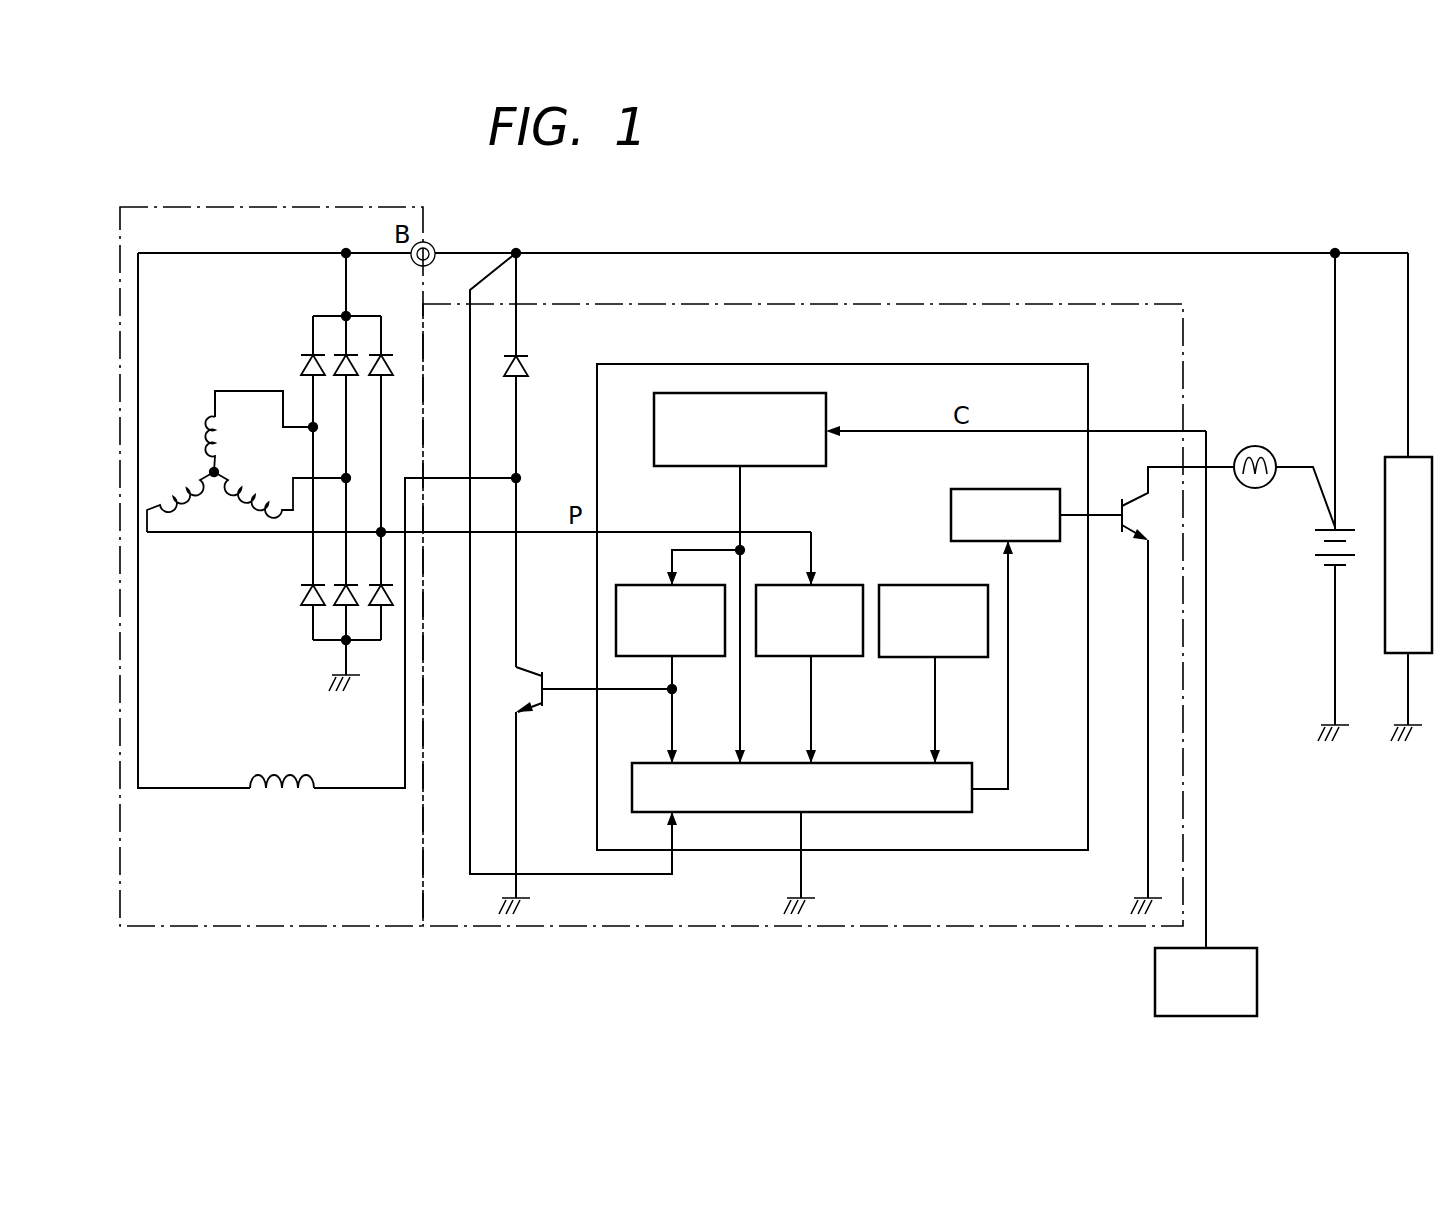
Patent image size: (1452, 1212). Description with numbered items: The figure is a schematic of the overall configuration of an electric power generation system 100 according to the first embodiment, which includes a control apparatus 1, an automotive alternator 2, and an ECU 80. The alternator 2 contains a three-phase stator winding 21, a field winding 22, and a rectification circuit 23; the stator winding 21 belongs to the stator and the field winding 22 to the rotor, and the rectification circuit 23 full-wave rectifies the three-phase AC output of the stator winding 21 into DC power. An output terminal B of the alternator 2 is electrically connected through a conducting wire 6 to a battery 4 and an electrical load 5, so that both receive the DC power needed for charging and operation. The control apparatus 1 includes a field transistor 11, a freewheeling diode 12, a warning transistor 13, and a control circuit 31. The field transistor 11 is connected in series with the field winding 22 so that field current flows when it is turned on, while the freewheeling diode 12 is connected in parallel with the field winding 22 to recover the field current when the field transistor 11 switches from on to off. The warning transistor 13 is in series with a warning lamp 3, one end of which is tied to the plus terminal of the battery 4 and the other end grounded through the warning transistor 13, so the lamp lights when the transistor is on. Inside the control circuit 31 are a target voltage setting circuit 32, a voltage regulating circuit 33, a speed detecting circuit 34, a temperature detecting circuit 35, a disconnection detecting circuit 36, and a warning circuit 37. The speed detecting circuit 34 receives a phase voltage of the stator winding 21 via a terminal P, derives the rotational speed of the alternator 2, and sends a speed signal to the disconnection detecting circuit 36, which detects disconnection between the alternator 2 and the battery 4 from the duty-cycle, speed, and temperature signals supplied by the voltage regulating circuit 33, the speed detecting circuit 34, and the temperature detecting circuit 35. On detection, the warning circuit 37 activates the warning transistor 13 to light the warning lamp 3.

The control apparatus 1 is at (1128, 305).
The automotive alternator 2 is at (423, 218).
The warning lamp 3 is at (1257, 445).
The battery 4 is at (1352, 528).
The electrical load 5 is at (1392, 455).
The conducting wire 6 is at (998, 252).
The field transistor 11 is at (535, 712).
The freewheeling diode 12 is at (530, 356).
The warning transistor 13 is at (1134, 542).
The three-phase stator winding 21 is at (206, 458).
The field winding 22 is at (287, 775).
The rectification circuit 23 is at (324, 316).
The control circuit 31 is at (1090, 380).
The target voltage setting circuit 32 is at (828, 409).
The voltage regulating circuit 33 is at (695, 658).
The speed detecting circuit 34 is at (847, 584).
The temperature detecting circuit 35 is at (911, 584).
The disconnection detecting circuit 36 is at (650, 763).
The warning circuit 37 is at (1045, 543).
The ECU 80 is at (1238, 948).
The electric power generation system 100 is at (930, 175).